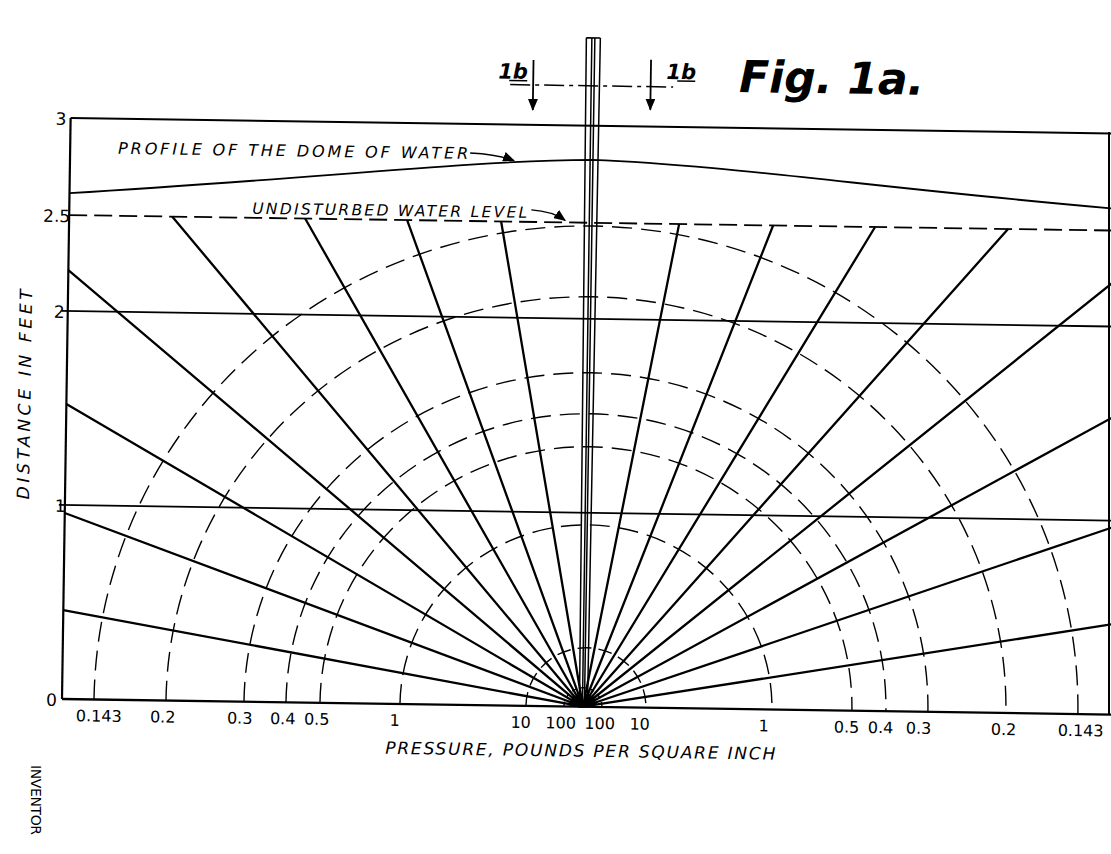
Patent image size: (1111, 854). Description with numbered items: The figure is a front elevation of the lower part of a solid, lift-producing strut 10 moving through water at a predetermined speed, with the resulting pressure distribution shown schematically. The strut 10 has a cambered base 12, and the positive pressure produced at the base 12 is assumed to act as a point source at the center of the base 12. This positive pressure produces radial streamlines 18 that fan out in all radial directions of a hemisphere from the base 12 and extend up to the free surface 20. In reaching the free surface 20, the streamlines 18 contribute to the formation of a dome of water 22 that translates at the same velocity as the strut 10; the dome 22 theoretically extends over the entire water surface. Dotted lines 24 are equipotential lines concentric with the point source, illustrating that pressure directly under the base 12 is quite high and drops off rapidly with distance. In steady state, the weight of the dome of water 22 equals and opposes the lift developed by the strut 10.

The strut 10 is at (602, 141).
The base 12 is at (583, 699).
The radial streamlines 18 is at (324, 252).
The free surface 20 is at (590, 168).
The dome of water 22 is at (738, 158).
The equipotential lines 24 is at (388, 420).